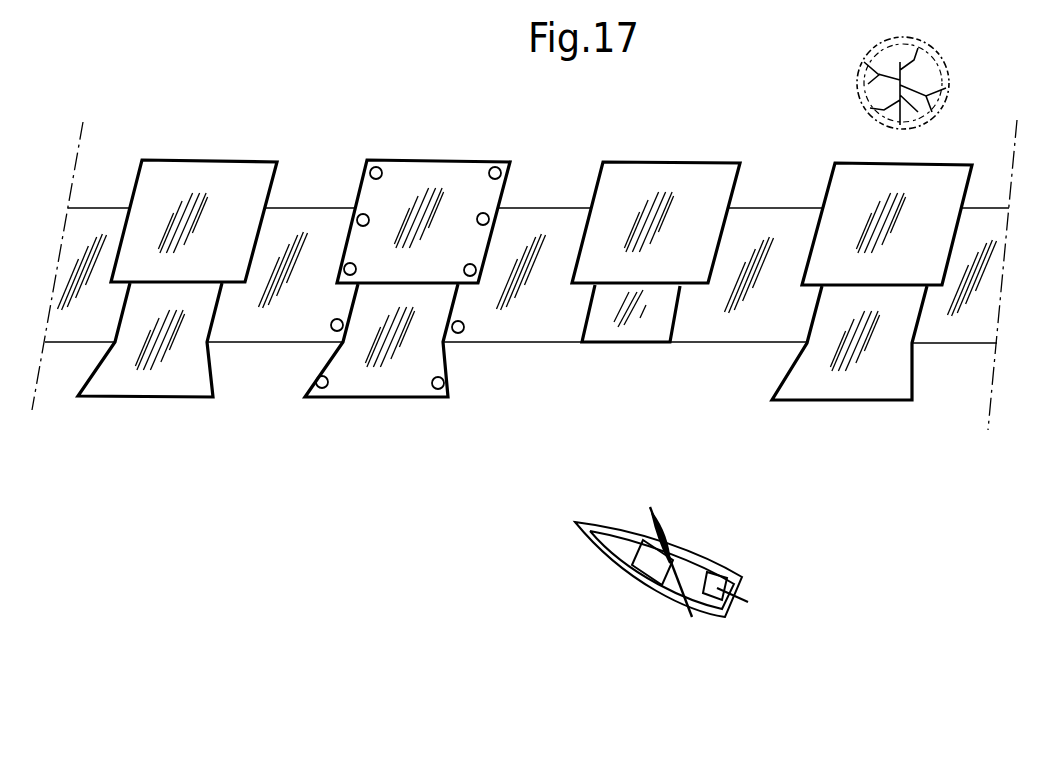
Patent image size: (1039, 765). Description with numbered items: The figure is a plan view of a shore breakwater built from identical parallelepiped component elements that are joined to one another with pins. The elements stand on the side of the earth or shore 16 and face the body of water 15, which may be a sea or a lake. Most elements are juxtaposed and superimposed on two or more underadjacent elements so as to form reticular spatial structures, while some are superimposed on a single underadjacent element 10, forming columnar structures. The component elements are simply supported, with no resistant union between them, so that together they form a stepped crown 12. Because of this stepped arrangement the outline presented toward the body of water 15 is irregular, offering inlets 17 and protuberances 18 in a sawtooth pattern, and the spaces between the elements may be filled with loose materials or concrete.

The underadjacent element 10 is at (355, 370).
The stepped crown 12 is at (447, 173).
The body of water 15 is at (302, 542).
The earth, shore 16 is at (370, 107).
The inlet 17 is at (722, 353).
The protuberance 18 is at (168, 397).